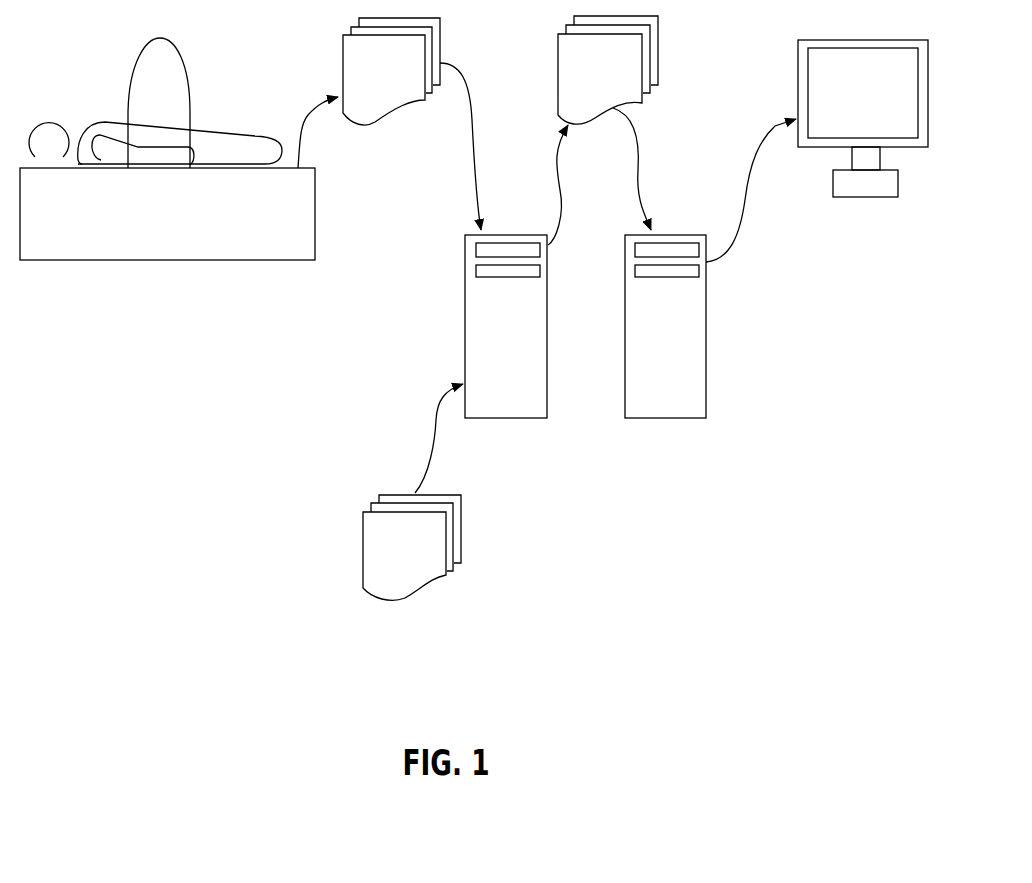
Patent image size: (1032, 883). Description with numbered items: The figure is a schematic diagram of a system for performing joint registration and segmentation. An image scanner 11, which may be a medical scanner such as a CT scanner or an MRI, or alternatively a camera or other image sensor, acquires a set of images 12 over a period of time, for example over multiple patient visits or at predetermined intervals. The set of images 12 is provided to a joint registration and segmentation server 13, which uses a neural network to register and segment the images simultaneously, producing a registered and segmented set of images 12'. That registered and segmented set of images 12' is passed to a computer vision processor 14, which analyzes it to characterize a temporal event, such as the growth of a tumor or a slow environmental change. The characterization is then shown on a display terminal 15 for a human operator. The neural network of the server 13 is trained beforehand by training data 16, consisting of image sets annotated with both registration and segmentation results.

The image scanner 11 is at (152, 237).
The set of images 12 is at (391, 71).
The registered and segmented set of images 12' is at (608, 70).
The joint registration and segmentation server 13 is at (491, 402).
The computer vision processor 14 is at (650, 402).
The display terminal 15 is at (850, 106).
The training data 16 is at (390, 571).